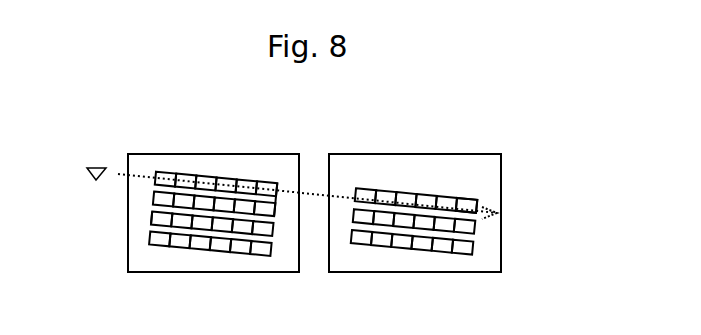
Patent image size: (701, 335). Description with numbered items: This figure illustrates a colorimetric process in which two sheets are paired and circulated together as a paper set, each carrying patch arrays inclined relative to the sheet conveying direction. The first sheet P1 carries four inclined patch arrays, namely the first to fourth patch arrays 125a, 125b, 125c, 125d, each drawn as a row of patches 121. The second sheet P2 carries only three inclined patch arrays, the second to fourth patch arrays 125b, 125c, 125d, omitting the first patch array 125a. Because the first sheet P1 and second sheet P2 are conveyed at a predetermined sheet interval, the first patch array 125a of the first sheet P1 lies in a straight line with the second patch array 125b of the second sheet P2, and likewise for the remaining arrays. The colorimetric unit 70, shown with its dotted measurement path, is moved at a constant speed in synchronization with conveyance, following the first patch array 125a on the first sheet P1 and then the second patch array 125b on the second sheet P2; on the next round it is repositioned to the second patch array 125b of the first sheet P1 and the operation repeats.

The colorimetric unit 70 is at (85, 172).
The pixel 121 is at (310, 220).
The first patch array 125a is at (207, 175).
The second patch array 125b is at (277, 210).
The third patch array 125c is at (150, 217).
The fourth patch array 125d is at (263, 255).
The first sheet P1 is at (158, 154).
The second sheet P2 is at (359, 154).